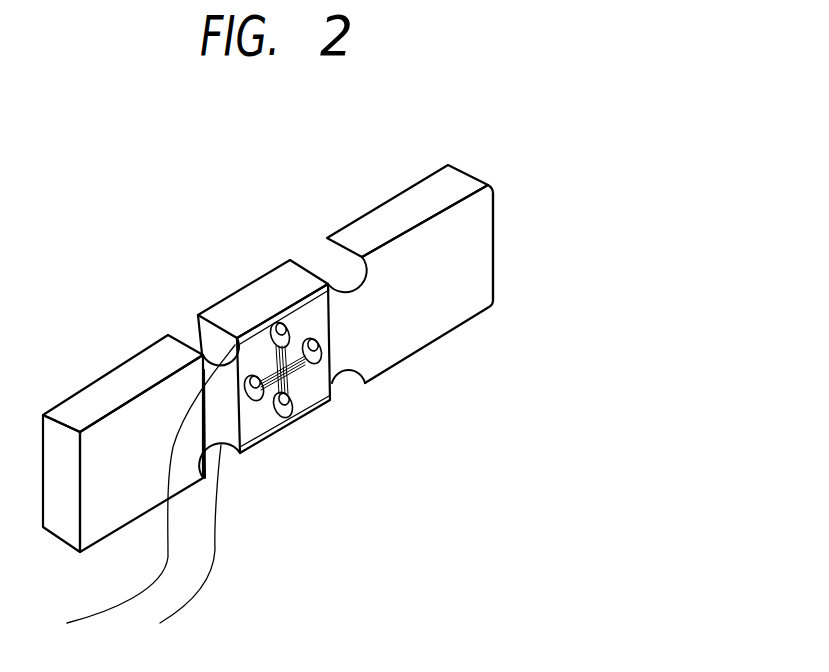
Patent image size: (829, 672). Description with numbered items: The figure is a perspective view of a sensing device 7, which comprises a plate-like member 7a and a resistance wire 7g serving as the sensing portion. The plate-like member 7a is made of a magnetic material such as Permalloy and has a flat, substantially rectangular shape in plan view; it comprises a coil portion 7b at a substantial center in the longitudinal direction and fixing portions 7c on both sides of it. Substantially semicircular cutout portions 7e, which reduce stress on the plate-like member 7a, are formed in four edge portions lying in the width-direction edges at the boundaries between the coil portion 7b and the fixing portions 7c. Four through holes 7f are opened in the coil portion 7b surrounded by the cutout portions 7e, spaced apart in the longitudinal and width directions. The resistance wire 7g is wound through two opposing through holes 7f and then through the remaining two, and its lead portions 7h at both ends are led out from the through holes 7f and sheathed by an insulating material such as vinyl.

The sensing device 7 is at (535, 237).
The plate-like member 7a is at (503, 190).
The coil portion 7b is at (230, 297).
The fixing portions 7c is at (100, 382).
The cutout portions 7e is at (203, 333).
The through holes 7f is at (309, 340).
The resistance wire 7g is at (318, 407).
The lead portions 7h is at (168, 553).